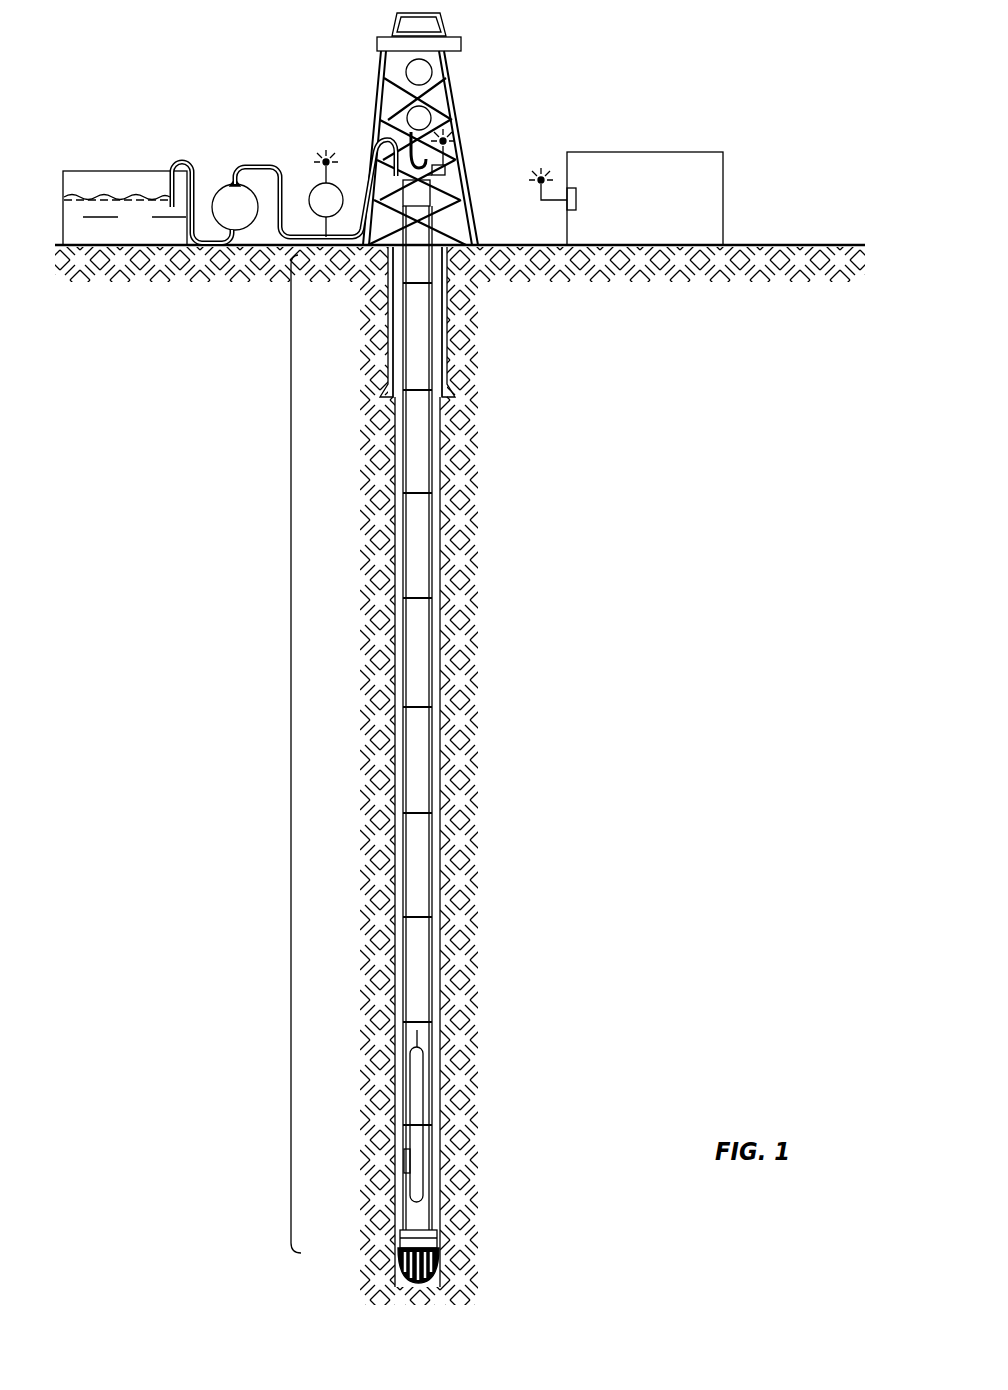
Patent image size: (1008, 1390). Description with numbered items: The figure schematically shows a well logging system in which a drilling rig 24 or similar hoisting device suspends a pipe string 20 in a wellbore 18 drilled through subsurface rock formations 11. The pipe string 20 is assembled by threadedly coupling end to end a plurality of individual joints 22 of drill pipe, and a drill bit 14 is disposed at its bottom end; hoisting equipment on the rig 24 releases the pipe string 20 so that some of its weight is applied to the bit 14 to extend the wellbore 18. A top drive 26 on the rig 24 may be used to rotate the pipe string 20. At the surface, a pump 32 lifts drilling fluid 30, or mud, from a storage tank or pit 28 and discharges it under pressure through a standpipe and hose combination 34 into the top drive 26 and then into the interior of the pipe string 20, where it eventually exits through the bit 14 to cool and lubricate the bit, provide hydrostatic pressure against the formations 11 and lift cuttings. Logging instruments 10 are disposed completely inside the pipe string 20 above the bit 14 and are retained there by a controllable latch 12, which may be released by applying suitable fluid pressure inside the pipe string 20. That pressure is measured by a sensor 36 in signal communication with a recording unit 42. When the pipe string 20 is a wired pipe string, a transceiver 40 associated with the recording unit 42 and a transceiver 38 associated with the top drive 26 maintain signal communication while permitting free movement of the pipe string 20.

The logging instruments 10 is at (420, 1093).
The subsurface rock formations 11 is at (630, 580).
The controllable latch 12 is at (403, 1157).
The drill bit 14 is at (409, 1282).
The wellbore 18 is at (436, 340).
The pipe string 20 is at (289, 768).
The joints of drill pipe 22 is at (436, 431).
The drilling rig 24 is at (453, 88).
The top drive 26 is at (432, 176).
The storage tank or pit 28 is at (96, 170).
The drilling fluid 30 is at (135, 228).
The pump 32 is at (228, 186).
The standpipe and hose combination 34 is at (376, 158).
The sensor 36 is at (320, 185).
The transceiver 38 is at (452, 166).
The transceiver 40 is at (554, 204).
The recording unit 42 is at (661, 215).